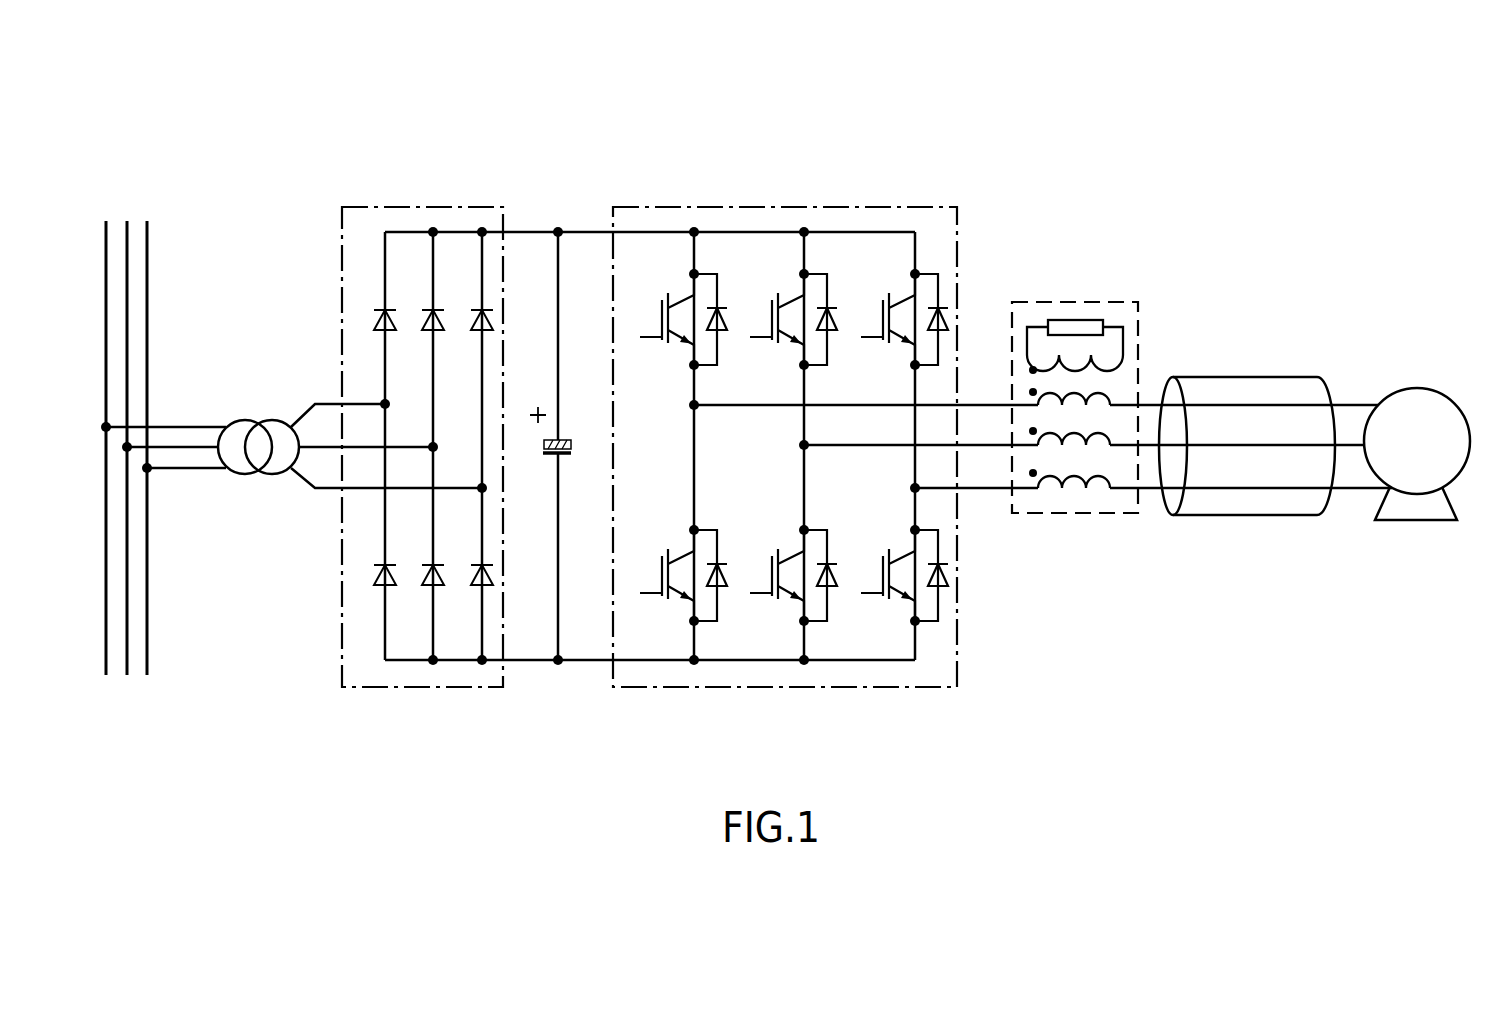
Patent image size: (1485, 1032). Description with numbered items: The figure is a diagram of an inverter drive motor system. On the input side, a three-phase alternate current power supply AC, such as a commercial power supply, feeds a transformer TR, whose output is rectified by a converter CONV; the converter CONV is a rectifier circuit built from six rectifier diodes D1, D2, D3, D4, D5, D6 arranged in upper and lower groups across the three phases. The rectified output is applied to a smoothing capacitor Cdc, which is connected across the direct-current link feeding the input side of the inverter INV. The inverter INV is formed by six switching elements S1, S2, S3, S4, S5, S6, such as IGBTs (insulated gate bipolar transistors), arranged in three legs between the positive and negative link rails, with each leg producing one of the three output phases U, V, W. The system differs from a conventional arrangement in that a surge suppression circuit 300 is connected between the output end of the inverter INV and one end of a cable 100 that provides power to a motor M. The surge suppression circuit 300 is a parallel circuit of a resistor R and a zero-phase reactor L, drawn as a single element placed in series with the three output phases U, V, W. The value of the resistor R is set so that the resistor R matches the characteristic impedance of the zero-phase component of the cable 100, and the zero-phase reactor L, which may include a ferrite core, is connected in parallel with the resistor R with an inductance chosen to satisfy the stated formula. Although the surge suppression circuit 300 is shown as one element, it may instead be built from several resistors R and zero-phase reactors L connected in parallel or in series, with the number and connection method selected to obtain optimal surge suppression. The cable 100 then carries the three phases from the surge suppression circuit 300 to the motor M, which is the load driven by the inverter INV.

The three-phase alternate current power supply AC is at (103, 212).
The transformer TR is at (294, 438).
The converter CONV is at (628, 402).
The rectifier diode D1 is at (371, 304).
The rectifier diode D2 is at (420, 304).
The rectifier diode D3 is at (469, 304).
The rectifier diode D4 is at (371, 558).
The rectifier diode D5 is at (420, 558).
The rectifier diode D6 is at (469, 558).
The smoothing capacitor Cdc is at (561, 446).
The inverter INV is at (785, 399).
The switching element S1 is at (678, 319).
The switching element S2 is at (788, 319).
The switching element S3 is at (899, 319).
The switching element S4 is at (678, 575).
The switching element S5 is at (788, 575).
The switching element S6 is at (899, 575).
The U phase output line U is at (1036, 389).
The V phase output line V is at (1084, 429).
The W phase output line W is at (1153, 472).
The surge suppression circuit 300 is at (1103, 356).
The zero-phase reactor L is at (1113, 387).
The resistor R is at (1090, 320).
The cable 100 is at (1280, 377).
The motor M is at (1417, 454).